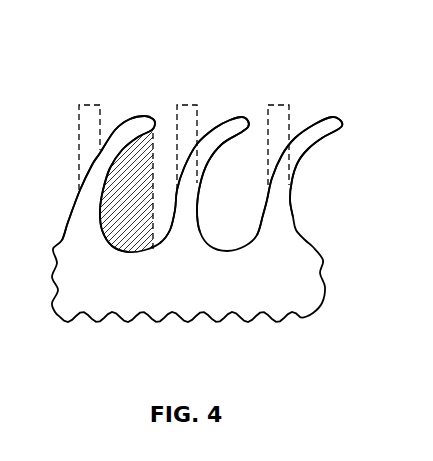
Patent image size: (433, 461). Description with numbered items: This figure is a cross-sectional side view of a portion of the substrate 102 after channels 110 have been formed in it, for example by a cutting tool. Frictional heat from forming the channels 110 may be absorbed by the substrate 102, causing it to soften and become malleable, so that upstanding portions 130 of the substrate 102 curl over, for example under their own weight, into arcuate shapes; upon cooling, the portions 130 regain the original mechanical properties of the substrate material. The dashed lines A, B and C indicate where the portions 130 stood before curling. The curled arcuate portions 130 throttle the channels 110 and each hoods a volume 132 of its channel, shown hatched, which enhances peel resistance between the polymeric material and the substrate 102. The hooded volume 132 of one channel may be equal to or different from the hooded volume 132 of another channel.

The substrate 102 is at (325, 288).
The channel 110 is at (161, 112).
The arcuate portion 130 is at (145, 117).
The hooded volume 132 is at (153, 204).
The dashed line A is at (97, 99).
The dashed line B is at (192, 99).
The dashed line C is at (283, 99).